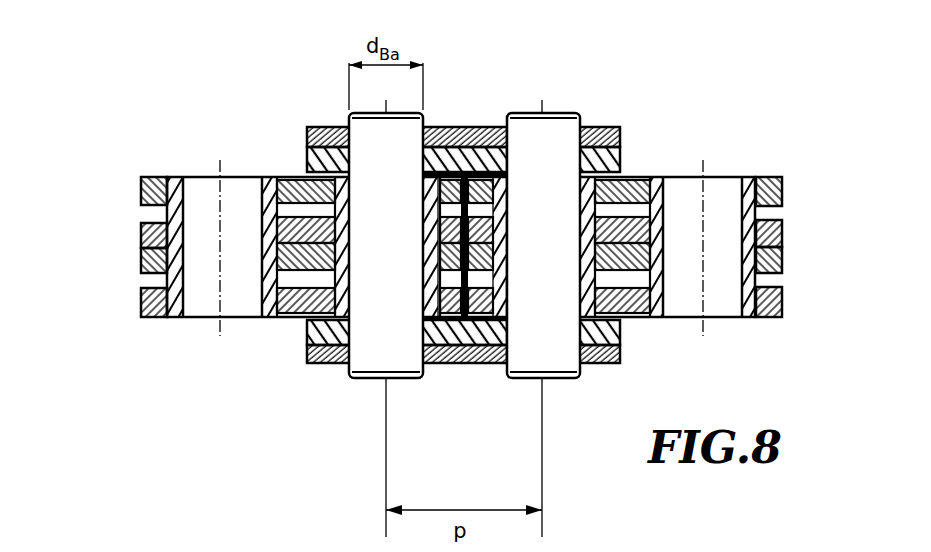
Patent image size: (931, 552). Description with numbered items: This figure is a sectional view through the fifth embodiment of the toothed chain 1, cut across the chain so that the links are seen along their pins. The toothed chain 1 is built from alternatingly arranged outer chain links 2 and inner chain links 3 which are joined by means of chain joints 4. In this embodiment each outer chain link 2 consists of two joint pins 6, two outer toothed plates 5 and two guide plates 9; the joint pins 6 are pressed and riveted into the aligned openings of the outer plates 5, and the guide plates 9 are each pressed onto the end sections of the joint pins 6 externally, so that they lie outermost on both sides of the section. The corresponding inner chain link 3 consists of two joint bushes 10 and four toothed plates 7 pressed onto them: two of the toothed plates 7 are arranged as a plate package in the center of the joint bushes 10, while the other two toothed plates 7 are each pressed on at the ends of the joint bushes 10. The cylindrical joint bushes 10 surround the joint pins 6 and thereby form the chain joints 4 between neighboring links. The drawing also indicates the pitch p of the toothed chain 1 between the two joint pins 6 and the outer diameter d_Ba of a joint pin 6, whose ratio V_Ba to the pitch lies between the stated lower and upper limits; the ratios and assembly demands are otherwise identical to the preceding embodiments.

The toothed chain 1 is at (773, 126).
The outer chain link 2 is at (453, 368).
The inner chain link 3 is at (290, 171).
The chain joint 4 is at (398, 384).
The outer plate 5 is at (620, 160).
The joint pin 6 is at (375, 362).
The toothed plate 7 is at (141, 200).
The guide plate 9 is at (620, 137).
The joint bush 10 is at (175, 177).